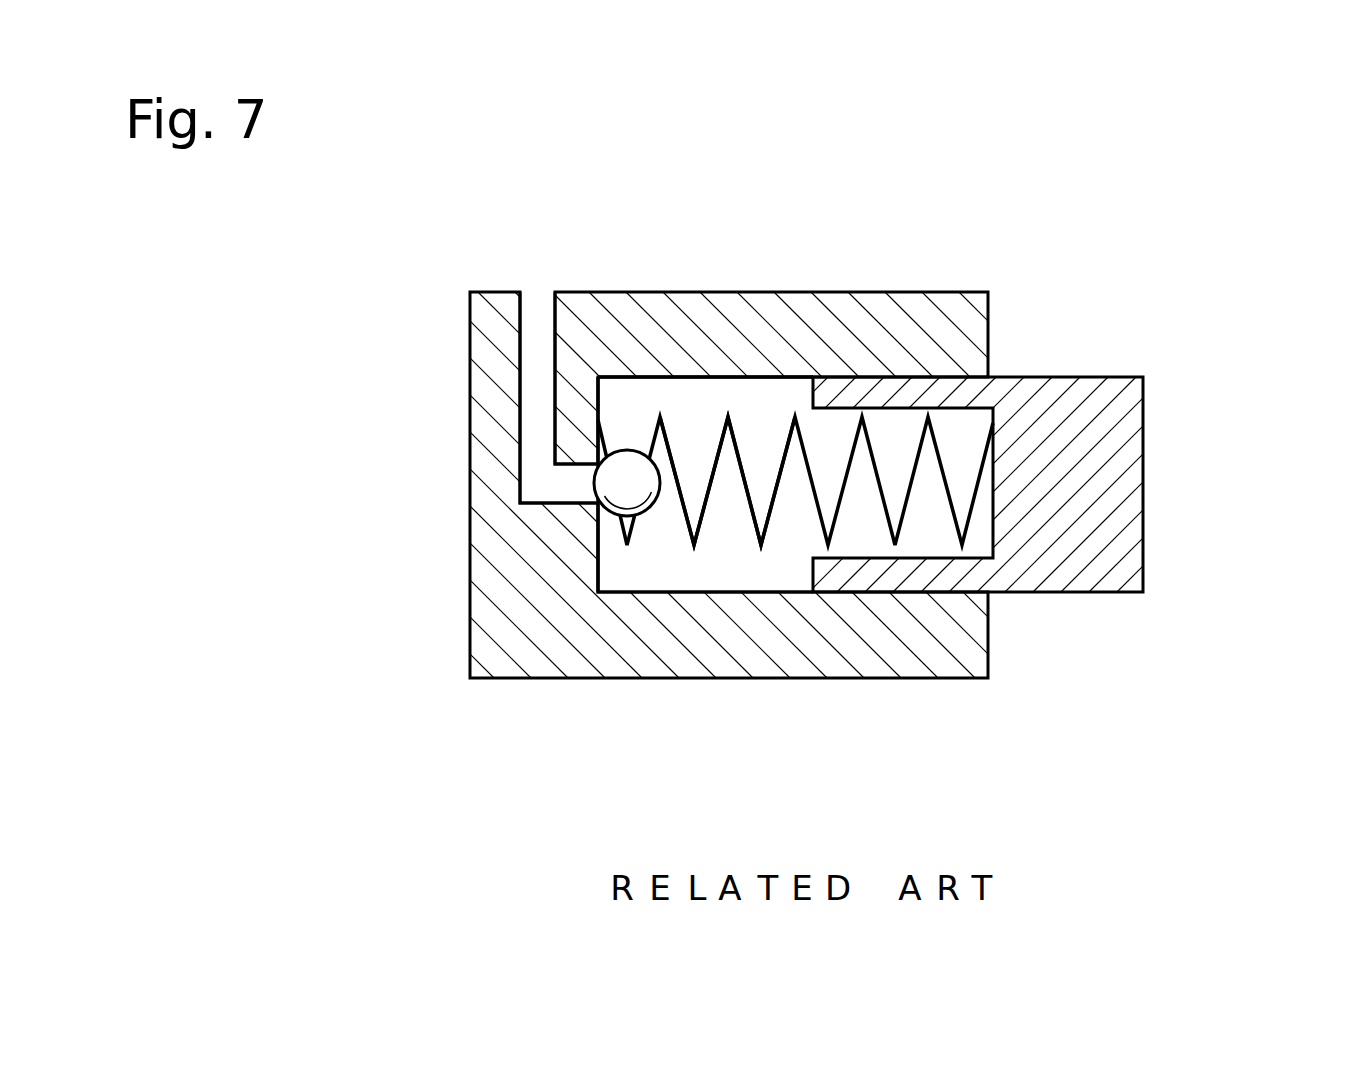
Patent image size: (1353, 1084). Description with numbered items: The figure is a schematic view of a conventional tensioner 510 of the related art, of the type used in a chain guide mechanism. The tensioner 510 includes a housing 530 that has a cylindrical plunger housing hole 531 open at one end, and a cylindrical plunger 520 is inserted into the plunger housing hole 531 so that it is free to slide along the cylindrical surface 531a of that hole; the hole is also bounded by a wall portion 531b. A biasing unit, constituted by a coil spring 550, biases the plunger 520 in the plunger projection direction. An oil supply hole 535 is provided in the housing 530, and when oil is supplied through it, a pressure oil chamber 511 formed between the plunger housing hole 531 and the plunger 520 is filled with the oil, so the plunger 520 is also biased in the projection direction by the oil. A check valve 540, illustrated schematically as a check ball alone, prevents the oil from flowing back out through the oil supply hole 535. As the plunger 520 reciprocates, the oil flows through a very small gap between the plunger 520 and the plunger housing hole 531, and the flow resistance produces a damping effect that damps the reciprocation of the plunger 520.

The tensioner 510 is at (726, 448).
The pressure oil chamber 511 is at (727, 525).
The plunger 520 is at (1118, 520).
The housing 530 is at (642, 643).
The plunger housing hole 531 is at (705, 363).
The cylindrical surface 531a is at (790, 377).
The side wall of recess 531b is at (612, 408).
The oil supply hole 535 is at (538, 293).
The check valve 540 is at (594, 483).
The coil spring 550 is at (906, 503).